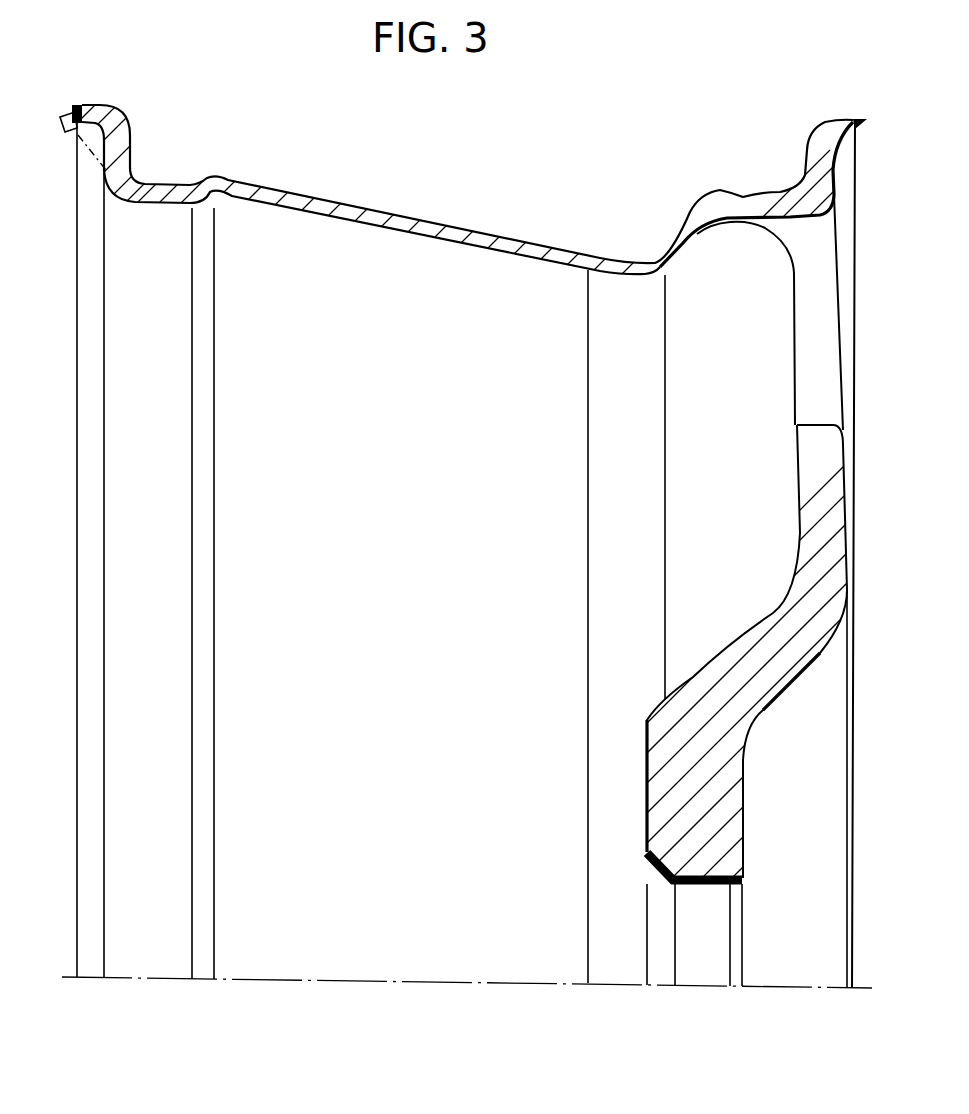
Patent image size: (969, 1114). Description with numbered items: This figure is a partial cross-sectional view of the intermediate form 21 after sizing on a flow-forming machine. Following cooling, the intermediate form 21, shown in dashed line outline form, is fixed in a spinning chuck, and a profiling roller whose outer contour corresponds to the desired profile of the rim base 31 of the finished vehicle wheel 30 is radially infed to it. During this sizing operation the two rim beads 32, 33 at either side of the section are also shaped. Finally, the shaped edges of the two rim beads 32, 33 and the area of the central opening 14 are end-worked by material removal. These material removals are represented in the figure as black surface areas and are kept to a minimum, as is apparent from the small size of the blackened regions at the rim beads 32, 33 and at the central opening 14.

The central opening 14 is at (700, 958).
The intermediate form 21 is at (64, 150).
The vehicle wheel 30 is at (267, 172).
The rim base 31 is at (392, 222).
The rim bead 32 is at (97, 113).
The rim bead 33 is at (828, 138).